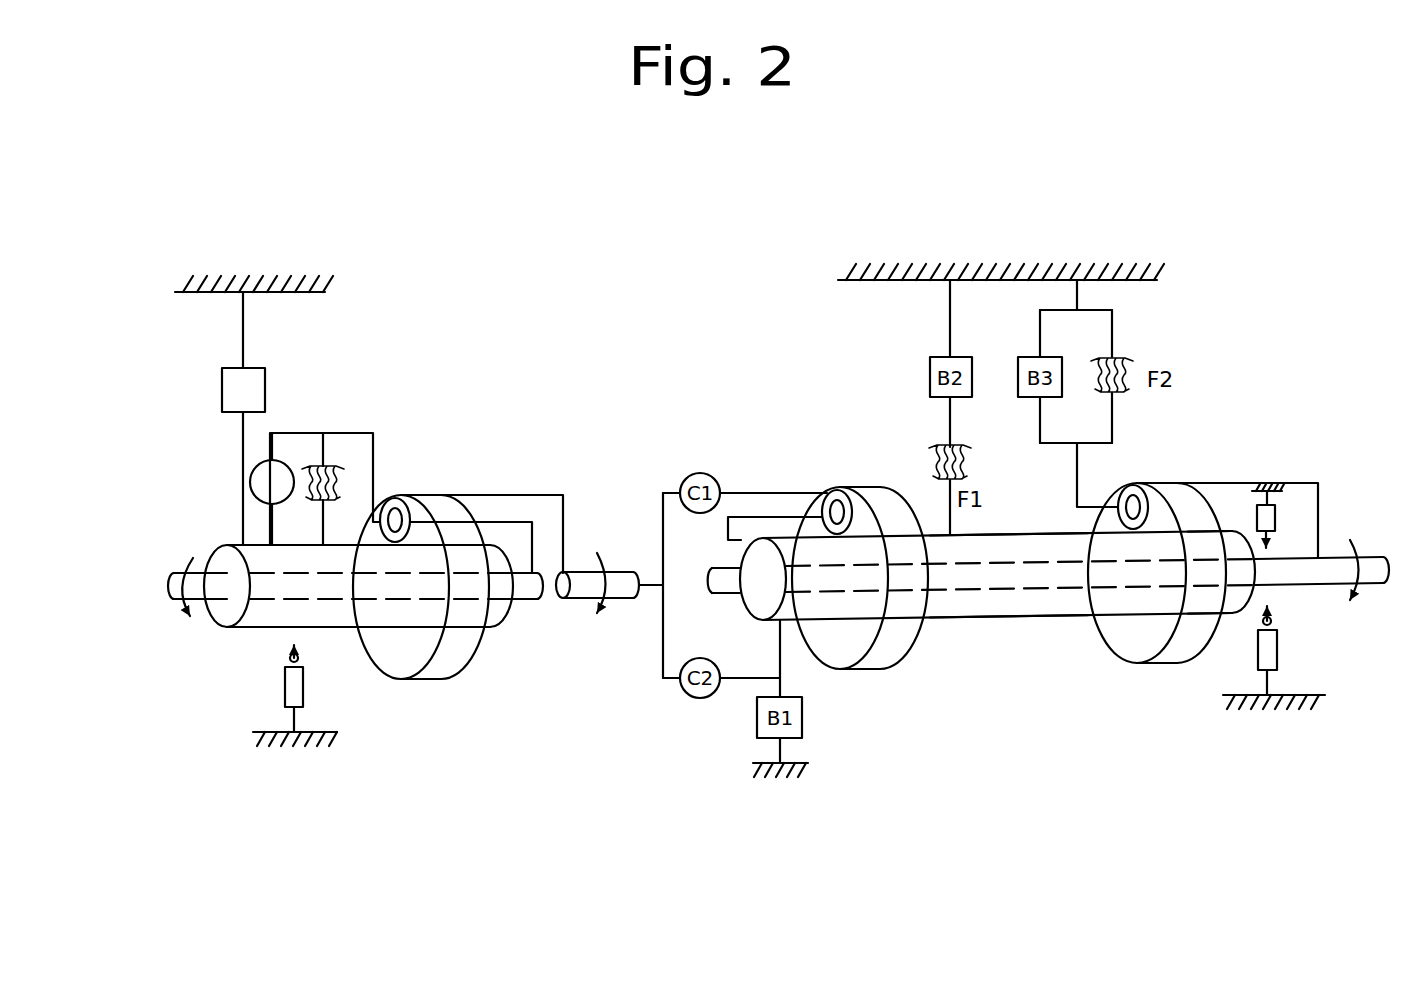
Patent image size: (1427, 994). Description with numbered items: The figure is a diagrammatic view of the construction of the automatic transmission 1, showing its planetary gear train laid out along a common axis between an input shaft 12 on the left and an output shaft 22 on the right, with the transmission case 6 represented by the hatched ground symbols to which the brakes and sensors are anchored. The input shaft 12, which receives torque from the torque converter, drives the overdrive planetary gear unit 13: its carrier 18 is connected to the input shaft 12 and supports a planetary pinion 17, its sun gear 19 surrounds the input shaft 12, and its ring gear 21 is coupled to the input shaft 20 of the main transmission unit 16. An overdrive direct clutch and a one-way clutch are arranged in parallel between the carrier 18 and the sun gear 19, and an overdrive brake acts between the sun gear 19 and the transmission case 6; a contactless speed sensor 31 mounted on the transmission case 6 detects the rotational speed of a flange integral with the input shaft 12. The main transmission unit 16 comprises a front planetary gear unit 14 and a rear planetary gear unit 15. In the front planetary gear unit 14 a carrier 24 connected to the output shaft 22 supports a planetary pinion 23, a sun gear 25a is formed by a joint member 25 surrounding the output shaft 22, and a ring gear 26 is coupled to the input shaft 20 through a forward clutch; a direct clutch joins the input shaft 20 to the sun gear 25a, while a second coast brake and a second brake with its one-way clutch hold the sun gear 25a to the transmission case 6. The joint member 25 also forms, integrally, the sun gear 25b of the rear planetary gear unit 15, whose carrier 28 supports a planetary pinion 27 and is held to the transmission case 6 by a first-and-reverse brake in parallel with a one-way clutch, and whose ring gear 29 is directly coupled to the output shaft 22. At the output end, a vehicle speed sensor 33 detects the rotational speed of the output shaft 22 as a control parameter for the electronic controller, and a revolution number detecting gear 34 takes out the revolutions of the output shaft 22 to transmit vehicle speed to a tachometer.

The automatic transmission 1 is at (693, 256).
The transmission case 6 is at (300, 293).
The input shaft 12 is at (207, 570).
The overdrive planetary gear unit 13 is at (457, 492).
The front planetary gear unit 14 is at (874, 482).
The rear planetary gear unit 15 is at (1177, 453).
The main transmission unit 16 is at (854, 461).
The planetary pinion 17 is at (397, 498).
The carrier 18 is at (372, 433).
The sun gear 19 is at (343, 627).
The input shaft 20 is at (616, 600).
The ring gear 21 is at (457, 650).
The output shaft 22 is at (1322, 583).
The planetary pinion 23 is at (834, 496).
The carrier 24 is at (770, 516).
The joint member 25 is at (1020, 617).
The sun gear 25a is at (942, 622).
The sun gear 25b is at (1082, 618).
The ring gear 26 is at (880, 662).
The planetary pinion 27 is at (1133, 486).
The carrier 28 is at (1077, 485).
The ring gear 29 is at (1187, 508).
The speed sensor 31 is at (283, 688).
The vehicle speed sensor 33 is at (1275, 523).
The revolution number detecting gear 34 is at (1255, 655).